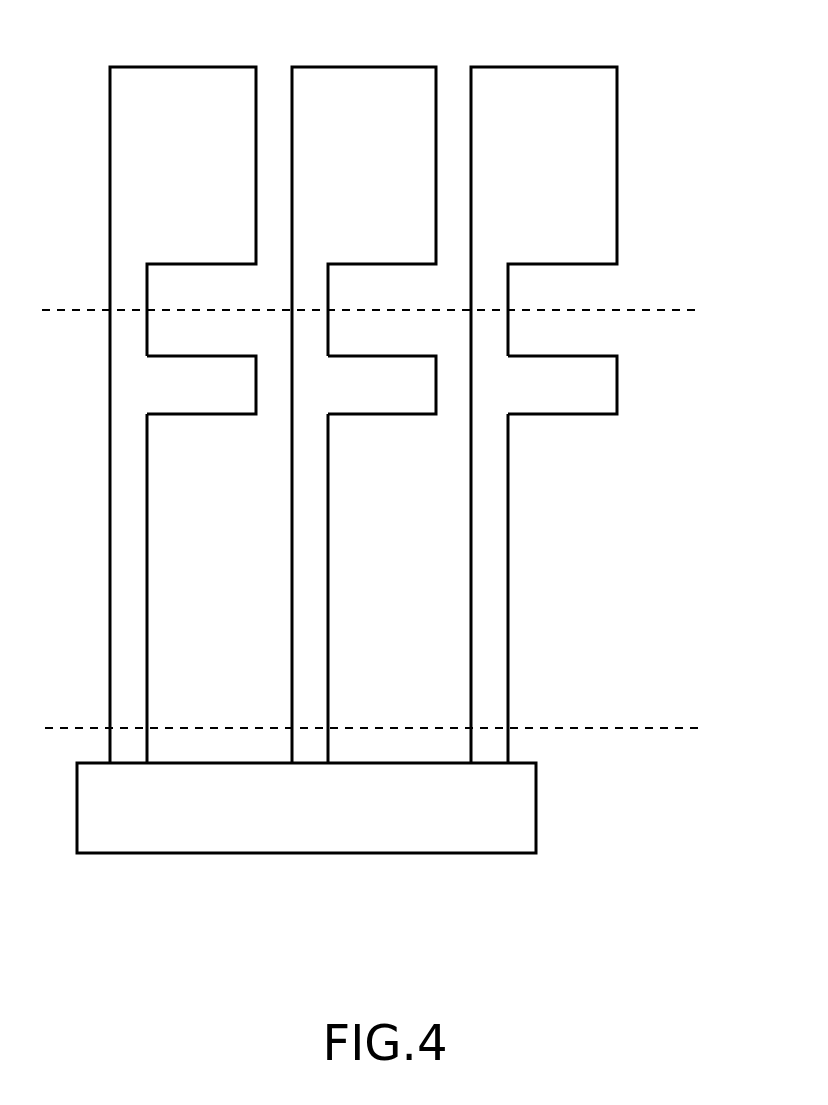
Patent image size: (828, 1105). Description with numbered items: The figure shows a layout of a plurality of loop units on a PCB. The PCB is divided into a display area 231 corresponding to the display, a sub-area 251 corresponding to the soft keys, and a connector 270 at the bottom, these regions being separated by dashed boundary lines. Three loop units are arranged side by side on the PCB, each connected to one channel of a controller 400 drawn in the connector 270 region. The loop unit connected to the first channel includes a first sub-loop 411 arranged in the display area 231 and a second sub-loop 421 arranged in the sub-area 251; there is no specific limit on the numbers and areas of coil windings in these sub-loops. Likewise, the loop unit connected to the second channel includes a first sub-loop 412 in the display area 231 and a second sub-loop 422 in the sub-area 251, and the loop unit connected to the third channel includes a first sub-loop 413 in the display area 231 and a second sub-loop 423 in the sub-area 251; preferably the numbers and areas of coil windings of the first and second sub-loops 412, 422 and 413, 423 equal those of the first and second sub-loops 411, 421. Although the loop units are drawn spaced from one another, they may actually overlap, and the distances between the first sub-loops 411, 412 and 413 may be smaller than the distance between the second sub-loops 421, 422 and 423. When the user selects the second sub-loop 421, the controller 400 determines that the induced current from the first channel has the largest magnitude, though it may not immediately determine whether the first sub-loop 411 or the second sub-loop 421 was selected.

The first sub-loop 411 is at (183, 390).
The first sub-loop 412 is at (364, 390).
The first sub-loop 413 is at (544, 390).
The second sub-loop 421 is at (203, 417).
The second sub-loop 422 is at (384, 417).
The second sub-loop 423 is at (564, 417).
The controller 400 is at (309, 856).
The display area 231 is at (653, 175).
The sub-area 251 is at (646, 553).
The connector 270 is at (648, 804).